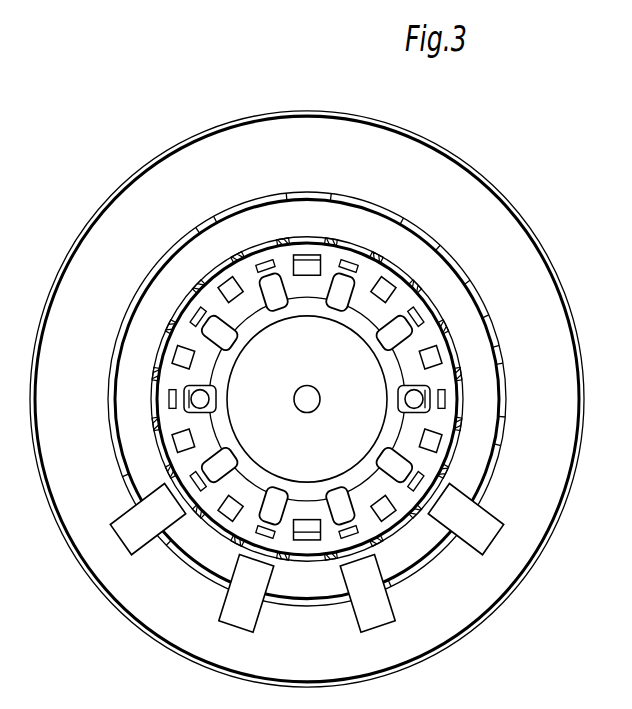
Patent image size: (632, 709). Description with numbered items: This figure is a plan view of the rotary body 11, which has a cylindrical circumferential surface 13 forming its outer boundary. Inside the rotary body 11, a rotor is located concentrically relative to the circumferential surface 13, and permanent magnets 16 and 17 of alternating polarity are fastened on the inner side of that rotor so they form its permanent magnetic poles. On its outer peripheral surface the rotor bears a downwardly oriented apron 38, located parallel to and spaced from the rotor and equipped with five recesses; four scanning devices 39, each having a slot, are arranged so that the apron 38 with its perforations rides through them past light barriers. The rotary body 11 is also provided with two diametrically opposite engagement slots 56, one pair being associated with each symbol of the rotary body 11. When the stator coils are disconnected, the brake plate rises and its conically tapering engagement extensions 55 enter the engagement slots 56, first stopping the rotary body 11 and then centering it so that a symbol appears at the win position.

The rotary body 11 is at (311, 74).
The cylindrical circumferential surface 13 is at (578, 346).
The permanent magnet 16 is at (338, 240).
The permanent magnet 17 is at (380, 253).
The apron 38 is at (182, 242).
The scanning device 39 is at (306, 574).
The engagement extension 55 is at (427, 400).
The engagement slot 56 is at (397, 337).